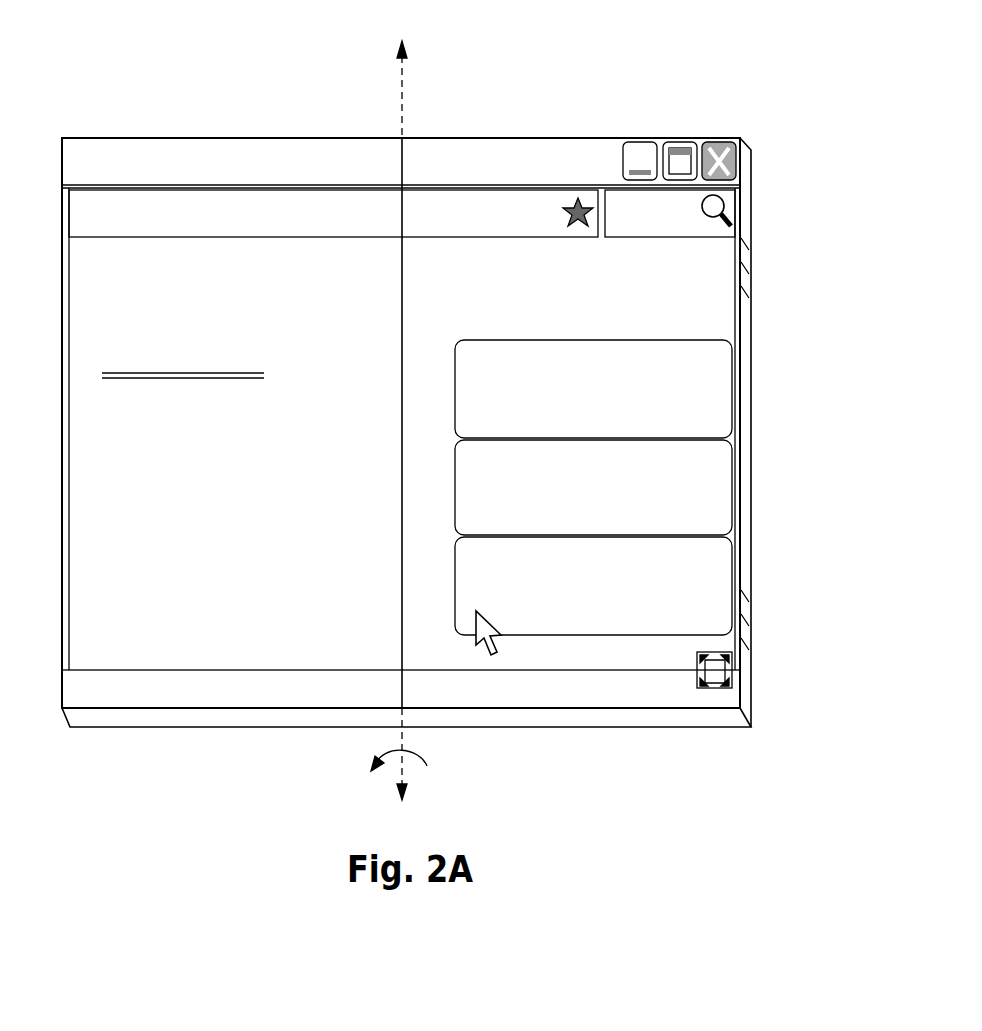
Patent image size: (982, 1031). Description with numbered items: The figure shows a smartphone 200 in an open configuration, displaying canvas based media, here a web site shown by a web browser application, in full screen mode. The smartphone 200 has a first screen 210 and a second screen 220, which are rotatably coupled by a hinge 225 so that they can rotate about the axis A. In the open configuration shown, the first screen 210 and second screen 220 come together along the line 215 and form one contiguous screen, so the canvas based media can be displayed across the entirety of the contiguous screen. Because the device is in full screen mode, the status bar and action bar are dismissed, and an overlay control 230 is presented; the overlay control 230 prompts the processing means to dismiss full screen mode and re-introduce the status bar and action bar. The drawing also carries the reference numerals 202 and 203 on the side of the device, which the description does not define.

The smartphone 200 is at (784, 113).
The window frame side edge 202 is at (751, 624).
The window frame side 203 is at (751, 268).
The first screen 210 is at (255, 265).
The line 215 is at (401, 89).
The second screen 220 is at (510, 270).
The hinge 225 is at (401, 710).
The overlay control 230 is at (732, 666).